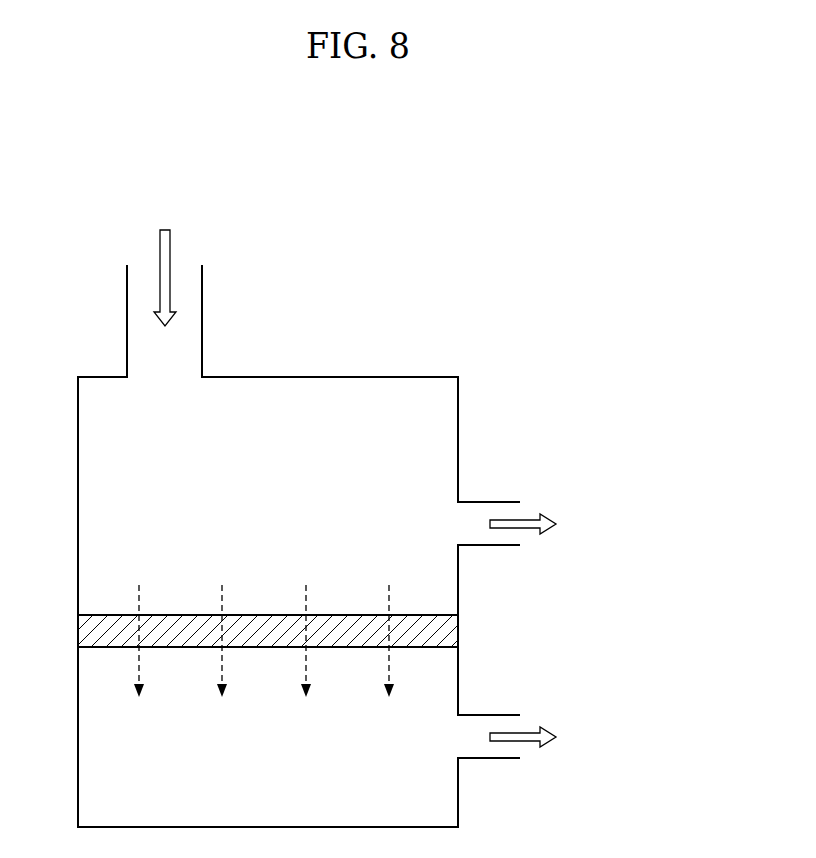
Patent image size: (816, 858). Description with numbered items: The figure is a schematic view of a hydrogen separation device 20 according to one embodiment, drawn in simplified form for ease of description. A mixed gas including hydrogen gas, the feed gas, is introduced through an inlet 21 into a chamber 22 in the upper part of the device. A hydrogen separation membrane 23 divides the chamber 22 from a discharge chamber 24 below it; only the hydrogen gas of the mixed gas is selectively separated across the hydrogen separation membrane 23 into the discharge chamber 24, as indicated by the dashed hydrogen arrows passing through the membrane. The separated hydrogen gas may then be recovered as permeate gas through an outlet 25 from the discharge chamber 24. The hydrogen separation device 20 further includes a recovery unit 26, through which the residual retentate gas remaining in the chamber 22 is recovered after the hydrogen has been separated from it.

The hydrogen separation device 20 is at (418, 280).
The inlet 21 is at (143, 270).
The chamber 22 is at (100, 522).
The hydrogen separation membrane 23 is at (100, 630).
The discharge chamber 24 is at (100, 710).
The outlet 25 is at (513, 750).
The recovery unit 26 is at (513, 510).